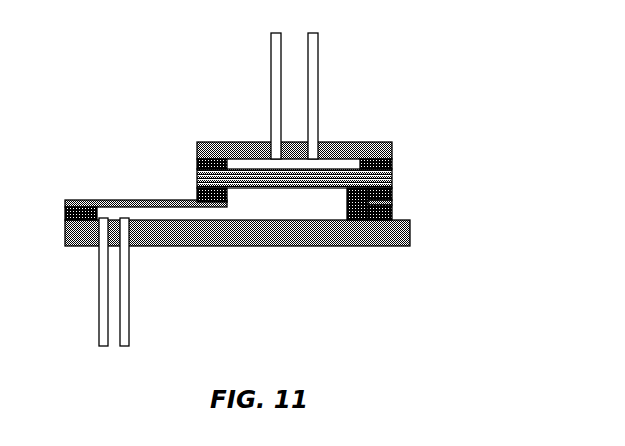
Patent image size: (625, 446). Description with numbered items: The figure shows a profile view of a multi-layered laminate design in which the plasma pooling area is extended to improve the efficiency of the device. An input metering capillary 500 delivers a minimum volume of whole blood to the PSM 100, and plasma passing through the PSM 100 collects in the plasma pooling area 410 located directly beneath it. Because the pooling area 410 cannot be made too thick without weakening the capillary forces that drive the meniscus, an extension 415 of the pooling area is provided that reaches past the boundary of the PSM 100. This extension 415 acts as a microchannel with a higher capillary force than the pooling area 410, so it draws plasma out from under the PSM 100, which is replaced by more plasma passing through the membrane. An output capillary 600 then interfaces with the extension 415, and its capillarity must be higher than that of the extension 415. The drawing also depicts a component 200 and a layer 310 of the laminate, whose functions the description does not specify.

The PSM 100 is at (393, 175).
The semiconductor chip 200 is at (362, 219).
The base plate 310 is at (392, 232).
The plasma pooling area 410 is at (285, 207).
The extension 415 is at (158, 211).
The input metering capillary 500 is at (318, 105).
The output capillary 600 is at (99, 300).